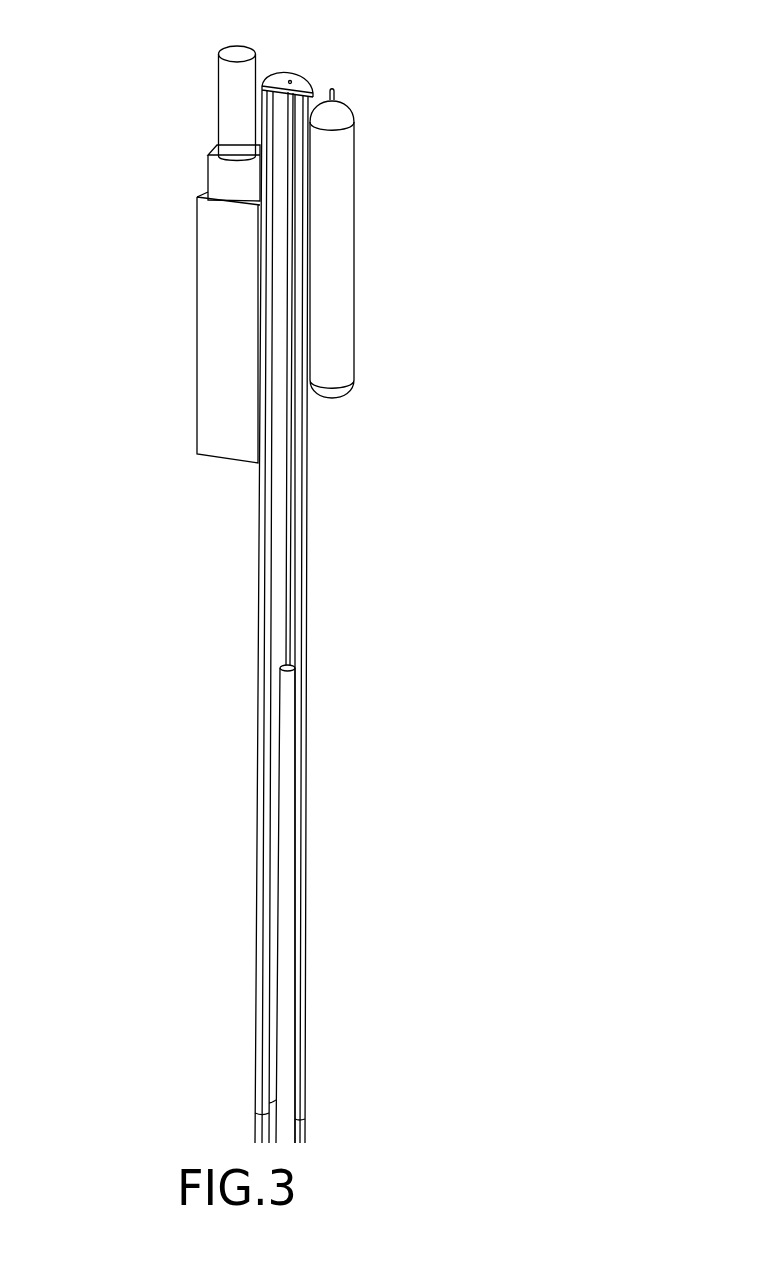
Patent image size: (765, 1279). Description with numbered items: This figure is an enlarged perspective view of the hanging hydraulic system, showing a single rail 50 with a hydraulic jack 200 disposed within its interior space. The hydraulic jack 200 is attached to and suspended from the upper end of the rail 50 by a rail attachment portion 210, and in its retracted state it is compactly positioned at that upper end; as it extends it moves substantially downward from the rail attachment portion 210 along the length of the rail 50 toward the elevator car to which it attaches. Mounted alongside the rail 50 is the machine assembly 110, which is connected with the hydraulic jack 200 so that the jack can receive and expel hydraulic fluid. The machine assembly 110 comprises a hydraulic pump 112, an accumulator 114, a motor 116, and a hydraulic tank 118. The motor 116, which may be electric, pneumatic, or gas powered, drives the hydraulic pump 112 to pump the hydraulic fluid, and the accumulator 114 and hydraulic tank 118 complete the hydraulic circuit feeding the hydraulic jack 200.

The machine assembly 110 is at (572, 168).
The hydraulic pump 112 is at (232, 178).
The accumulator 114 is at (333, 203).
The motor 116 is at (228, 100).
The hydraulic tank 118 is at (212, 303).
The rail 50 is at (308, 510).
The hydraulic jack 200 is at (290, 733).
The rail attachment portion 210 is at (291, 81).